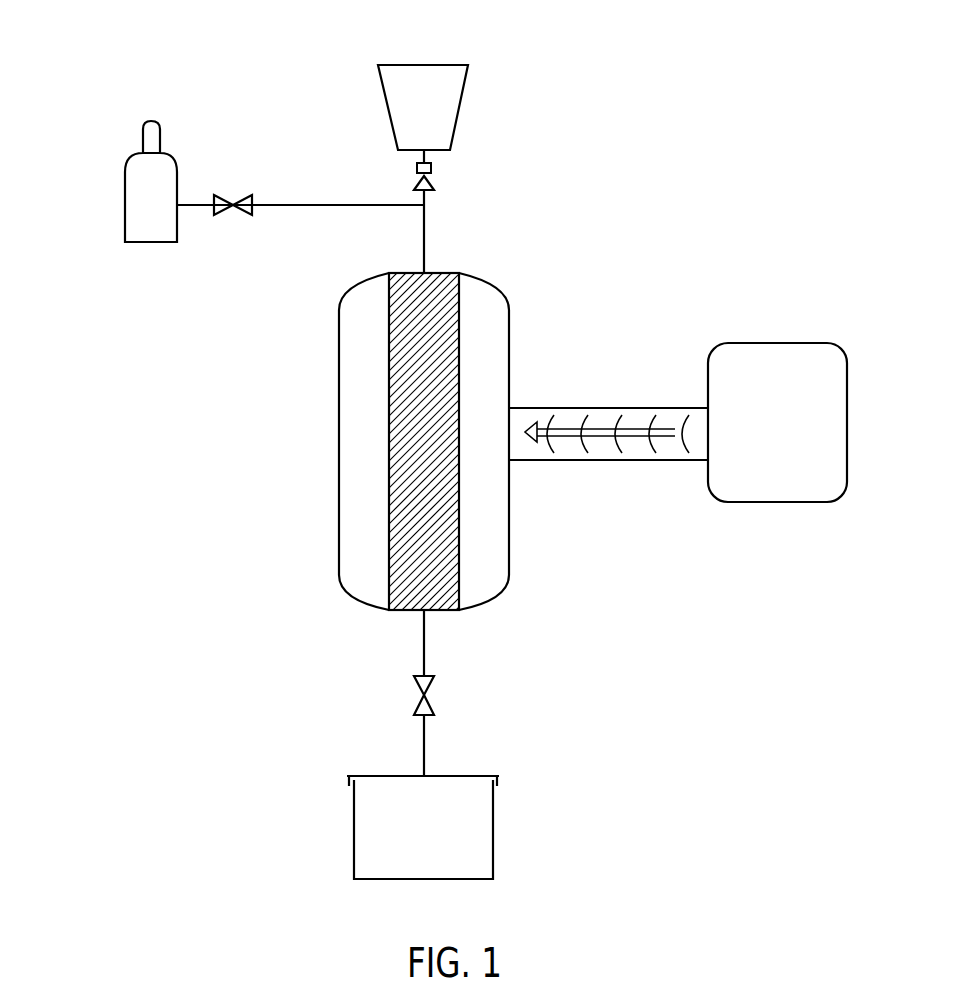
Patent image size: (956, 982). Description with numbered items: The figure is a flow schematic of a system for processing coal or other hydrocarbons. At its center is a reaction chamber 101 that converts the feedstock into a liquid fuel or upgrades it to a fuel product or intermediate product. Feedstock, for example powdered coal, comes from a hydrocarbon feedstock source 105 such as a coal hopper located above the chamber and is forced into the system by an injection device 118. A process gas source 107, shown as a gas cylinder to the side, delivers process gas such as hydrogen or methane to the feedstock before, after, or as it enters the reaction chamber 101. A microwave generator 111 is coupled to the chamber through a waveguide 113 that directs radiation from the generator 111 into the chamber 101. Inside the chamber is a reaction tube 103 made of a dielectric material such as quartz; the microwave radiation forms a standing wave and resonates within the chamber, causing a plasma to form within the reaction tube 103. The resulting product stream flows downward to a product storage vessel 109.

The reaction chamber 101 is at (339, 443).
The reaction tube 103 is at (403, 612).
The hydrocarbon feedstock source 105 is at (423, 62).
The process gas source 107 is at (125, 200).
The product storage vessel 109 is at (354, 835).
The microwave generator 111 is at (778, 343).
The waveguide 113 is at (610, 462).
The injection device 118 is at (432, 168).